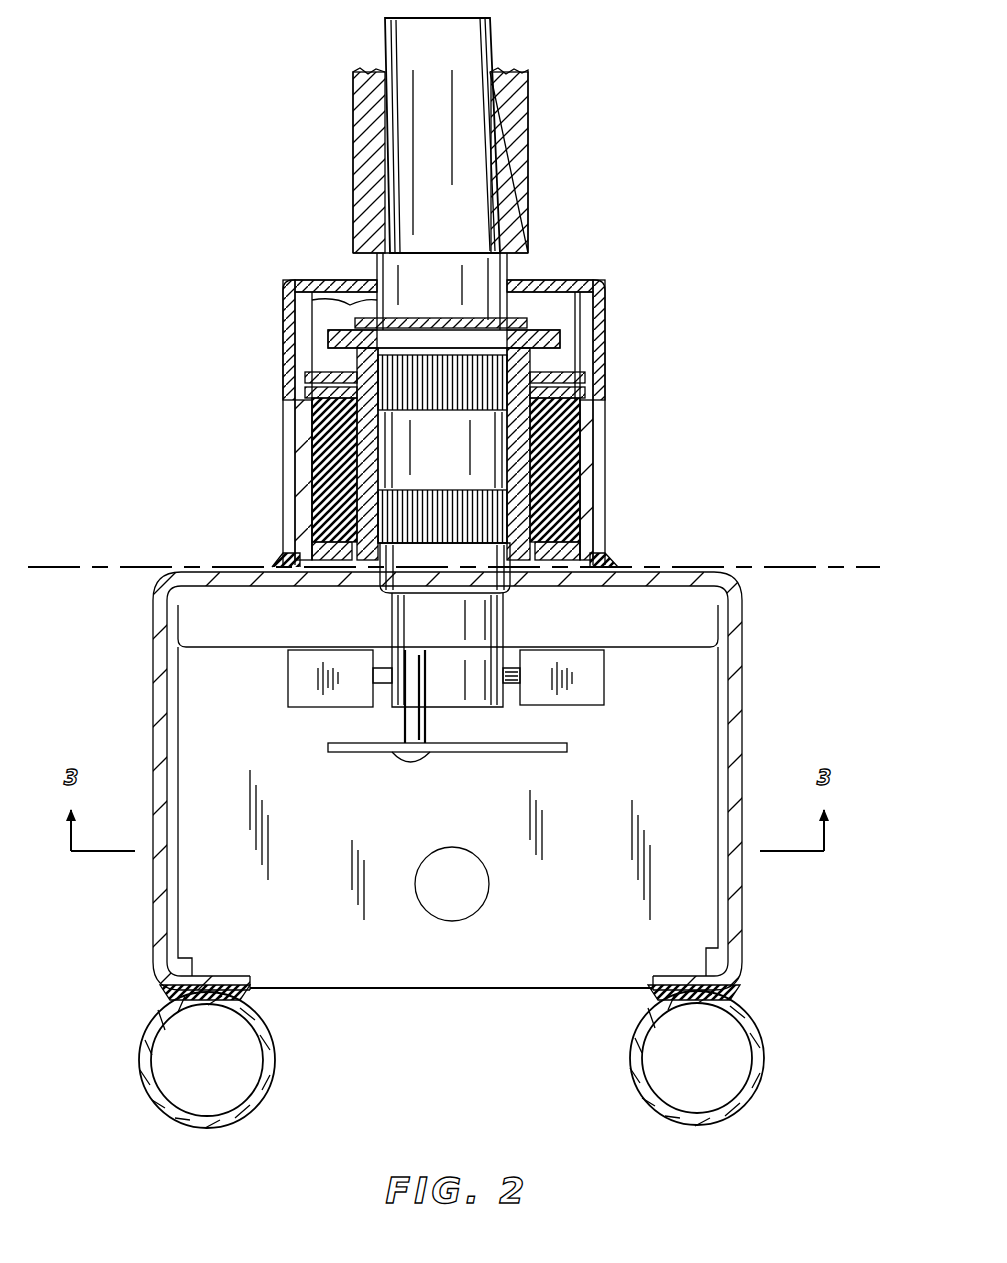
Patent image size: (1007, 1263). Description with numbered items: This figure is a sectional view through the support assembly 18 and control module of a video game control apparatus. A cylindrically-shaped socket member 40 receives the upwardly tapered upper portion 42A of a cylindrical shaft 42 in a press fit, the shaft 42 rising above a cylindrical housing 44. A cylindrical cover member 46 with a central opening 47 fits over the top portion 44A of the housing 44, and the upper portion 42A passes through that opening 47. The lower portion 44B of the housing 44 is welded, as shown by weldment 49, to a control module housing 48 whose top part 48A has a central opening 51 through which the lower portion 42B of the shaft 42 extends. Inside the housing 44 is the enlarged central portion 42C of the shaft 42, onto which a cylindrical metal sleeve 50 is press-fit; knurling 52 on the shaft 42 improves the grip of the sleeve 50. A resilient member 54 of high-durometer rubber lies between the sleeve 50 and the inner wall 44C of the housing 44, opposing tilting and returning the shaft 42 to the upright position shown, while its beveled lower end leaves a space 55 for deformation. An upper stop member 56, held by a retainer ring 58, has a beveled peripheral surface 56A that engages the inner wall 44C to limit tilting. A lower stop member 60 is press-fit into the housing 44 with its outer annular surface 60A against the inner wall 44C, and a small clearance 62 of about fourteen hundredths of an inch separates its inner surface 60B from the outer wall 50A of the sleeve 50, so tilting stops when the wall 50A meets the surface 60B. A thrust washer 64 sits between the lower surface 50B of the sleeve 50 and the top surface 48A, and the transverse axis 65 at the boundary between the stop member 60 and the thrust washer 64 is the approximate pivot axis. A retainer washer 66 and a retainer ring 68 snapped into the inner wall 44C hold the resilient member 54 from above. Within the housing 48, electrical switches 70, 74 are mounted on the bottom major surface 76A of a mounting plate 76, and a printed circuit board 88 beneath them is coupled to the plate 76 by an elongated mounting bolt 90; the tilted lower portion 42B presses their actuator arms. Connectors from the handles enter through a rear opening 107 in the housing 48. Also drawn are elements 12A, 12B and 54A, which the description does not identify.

The wheel 12A is at (250, 1062).
The wheel 12B is at (655, 1058).
The support assembly 18 is at (625, 305).
The socket member 40 is at (528, 130).
The cylindrical shaft 42 is at (512, 40).
The upper portion of shaft 42A is at (384, 46).
The lower portion of shaft 42B is at (392, 632).
The central portion of shaft 42C is at (345, 301).
The cylindrical housing 44 is at (290, 426).
The top portion of housing 44A is at (586, 296).
The lower portion of housing 44B is at (614, 566).
The inner wall of housing 44C is at (595, 530).
The cover member 46 is at (323, 289).
The central opening 47 is at (525, 289).
The control module housing 48 is at (155, 690).
The top part of control module housing 48A is at (183, 571).
The weldment 49 is at (288, 561).
The metal sleeve 50 is at (580, 459).
The outer wall of sleeve 50A is at (578, 431).
The lower surface of sleeve 50B is at (445, 568).
The central opening 51 is at (370, 590).
The knurled portions 52 is at (441, 489).
The resilient member 54 is at (312, 456).
The coil bobbin 54A is at (365, 500).
The space 55 is at (340, 545).
The upper stop member 56 is at (596, 341).
The peripheral surface of stop member 56A is at (335, 341).
The retainer ring 58 is at (521, 319).
The lower stop member 60 is at (568, 586).
The outer annular surface of stop member 60A is at (300, 586).
The inner surface of stop member 60B is at (580, 511).
The clearance 62 is at (394, 563).
The thrust washer 64 is at (535, 586).
The transverse axis 65 is at (70, 566).
The retainer washer 66 is at (600, 393).
The retainer ring 68 is at (305, 385).
The electrical switch 70 is at (461, 715).
The electrical switch 74 is at (302, 707).
The mounting plate 76 is at (222, 650).
The bottom major surface of mounting plate 76A is at (665, 650).
The printed circuit board 88 is at (548, 745).
The mounting bolt 90 is at (425, 735).
The rear opening 107 is at (489, 885).